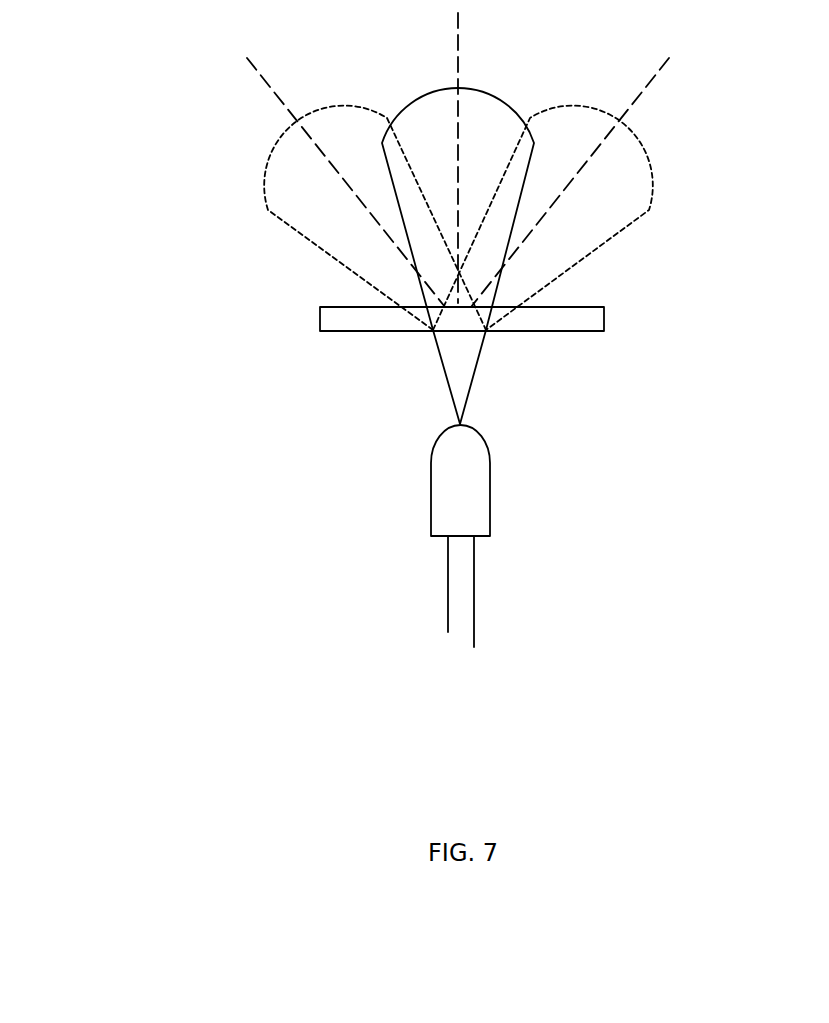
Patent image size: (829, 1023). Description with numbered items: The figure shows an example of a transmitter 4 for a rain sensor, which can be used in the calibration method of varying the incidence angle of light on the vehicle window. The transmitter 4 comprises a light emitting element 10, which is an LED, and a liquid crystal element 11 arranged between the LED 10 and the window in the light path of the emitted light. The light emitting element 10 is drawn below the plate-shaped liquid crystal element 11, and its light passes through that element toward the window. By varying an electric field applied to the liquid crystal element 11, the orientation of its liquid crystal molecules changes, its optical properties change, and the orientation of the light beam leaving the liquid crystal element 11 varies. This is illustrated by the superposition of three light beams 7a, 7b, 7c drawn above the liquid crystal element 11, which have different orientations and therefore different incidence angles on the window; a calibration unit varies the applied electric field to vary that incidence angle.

The transmitter 4 is at (708, 250).
The light beam 7a is at (315, 116).
The light beam 7b is at (470, 89).
The light beam 7c is at (586, 109).
The light emitting element 10 is at (490, 483).
The liquid crystal element 11 is at (604, 317).